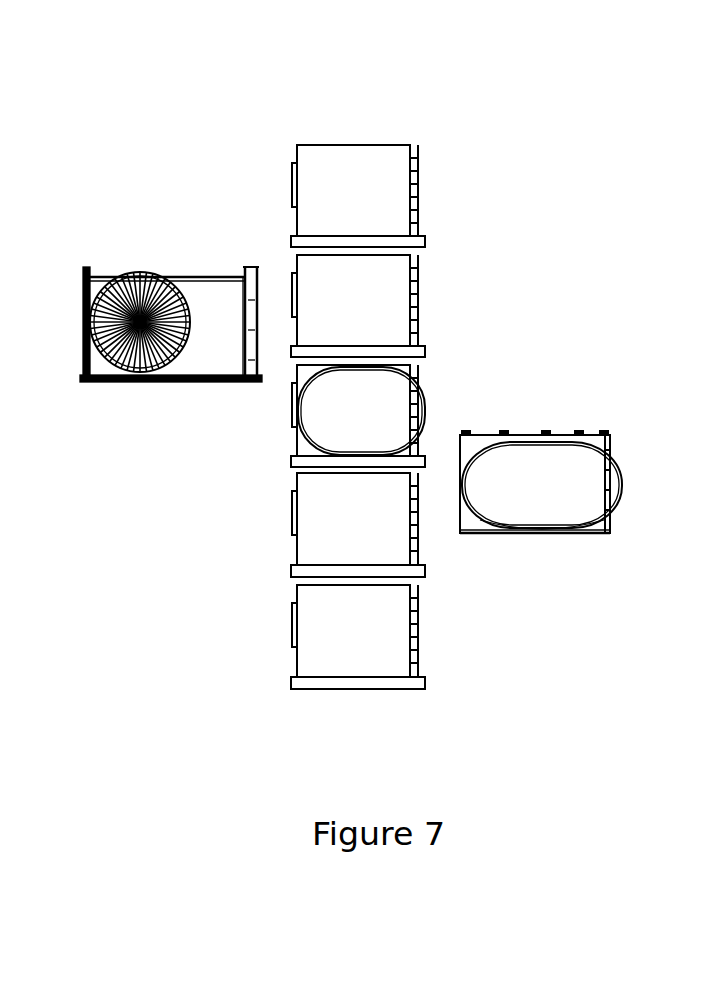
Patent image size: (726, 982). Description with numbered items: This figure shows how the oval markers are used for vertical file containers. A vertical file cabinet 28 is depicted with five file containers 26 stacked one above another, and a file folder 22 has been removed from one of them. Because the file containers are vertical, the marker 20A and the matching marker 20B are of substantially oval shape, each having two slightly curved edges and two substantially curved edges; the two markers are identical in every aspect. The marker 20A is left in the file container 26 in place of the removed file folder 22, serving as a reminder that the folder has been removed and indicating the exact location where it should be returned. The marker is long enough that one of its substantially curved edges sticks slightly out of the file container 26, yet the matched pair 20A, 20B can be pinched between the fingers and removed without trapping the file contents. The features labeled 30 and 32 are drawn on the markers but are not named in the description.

The file cabinet 28 is at (350, 135).
The marker 20A is at (376, 416).
The matching marker 20B is at (532, 495).
The file container 26 is at (295, 439).
The oval channel ring 30 is at (306, 398).
The mounting flange 32 is at (362, 371).
The file folder 22 is at (477, 536).